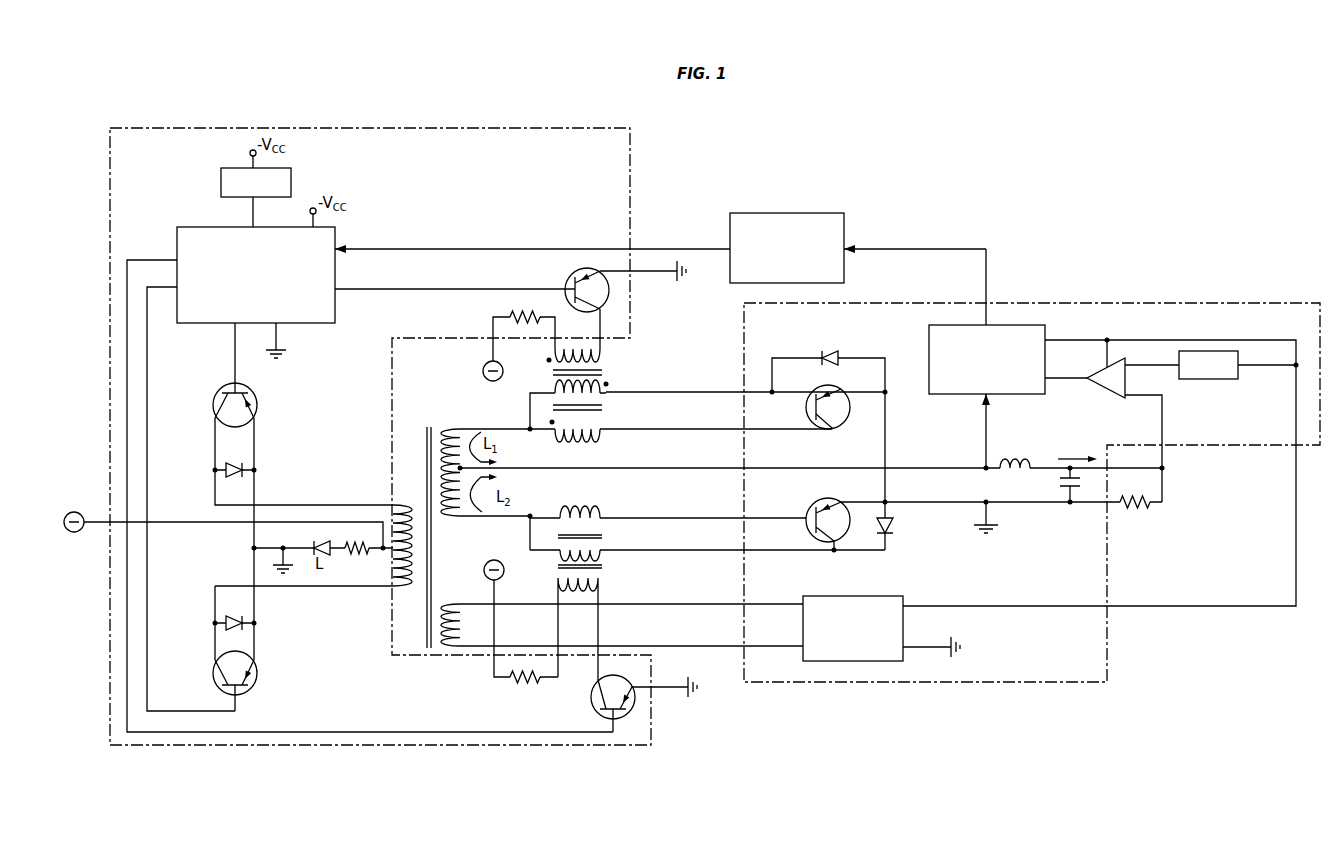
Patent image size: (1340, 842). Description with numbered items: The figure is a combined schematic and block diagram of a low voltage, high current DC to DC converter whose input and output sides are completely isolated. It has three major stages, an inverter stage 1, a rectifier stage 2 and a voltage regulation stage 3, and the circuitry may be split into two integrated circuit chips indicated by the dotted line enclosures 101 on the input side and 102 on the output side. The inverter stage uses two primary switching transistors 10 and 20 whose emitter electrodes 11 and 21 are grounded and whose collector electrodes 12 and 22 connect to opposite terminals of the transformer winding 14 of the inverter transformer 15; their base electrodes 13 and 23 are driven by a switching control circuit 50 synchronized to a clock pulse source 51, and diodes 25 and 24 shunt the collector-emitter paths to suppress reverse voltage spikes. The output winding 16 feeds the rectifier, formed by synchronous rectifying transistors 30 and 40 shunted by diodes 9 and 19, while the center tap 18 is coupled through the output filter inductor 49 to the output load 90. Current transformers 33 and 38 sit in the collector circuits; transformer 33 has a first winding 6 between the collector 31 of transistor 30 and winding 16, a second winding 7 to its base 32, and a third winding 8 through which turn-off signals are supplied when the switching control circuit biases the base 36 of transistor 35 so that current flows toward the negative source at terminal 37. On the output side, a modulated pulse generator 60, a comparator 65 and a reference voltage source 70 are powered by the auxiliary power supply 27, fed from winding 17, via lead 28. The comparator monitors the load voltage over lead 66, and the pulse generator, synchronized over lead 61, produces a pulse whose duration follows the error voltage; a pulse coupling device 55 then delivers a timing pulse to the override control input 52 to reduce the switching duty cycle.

The inverter stage 1 is at (283, 519).
The rectifier stage 2 is at (640, 467).
The voltage regulation stage 3 is at (1068, 478).
The first winding 6 is at (576, 403).
The second winding 7 is at (477, 460).
The third winding 8 is at (580, 359).
The diode 9 is at (828, 419).
The primary switching transistor 10 is at (240, 375).
The emitter electrode 11 is at (258, 415).
The collector electrode 12 is at (215, 411).
The base electrode 13 is at (243, 387).
The transformer winding 14 is at (405, 535).
The inverter transformer 15 is at (428, 599).
The output winding 16 is at (449, 460).
The winding 17 is at (622, 625).
The center tap 18 is at (461, 465).
The diode 19 is at (896, 526).
The primary switching transistor 20 is at (235, 683).
The emitter electrode 21 is at (257, 673).
The collector electrode 22 is at (214, 672).
The base electrode 23 is at (240, 693).
The diode 24 is at (234, 614).
The diode 25 is at (234, 460).
The auxiliary power supply 27 is at (857, 598).
The lead 28 is at (1296, 523).
The synchronous rectifying transistor 30 is at (828, 409).
The collector 31 is at (810, 411).
The base 32 is at (840, 432).
The current transformer 33 is at (541, 405).
The transistor 35 is at (586, 269).
The base 36 is at (474, 287).
The terminal 37 is at (507, 346).
The current transformer 38 is at (506, 503).
The synchronous rectifying transistor 40 is at (824, 518).
The output filter inductor 49 is at (1015, 453).
The switching control circuit 50 is at (300, 323).
The clock pulse source 51 is at (221, 184).
The override control input 52 is at (345, 252).
The pulse coupling device 55 is at (791, 214).
The modulated pulse generator 60 is at (929, 336).
The lead 61 is at (985, 443).
The comparator 65 is at (1113, 391).
The lead 66 is at (1163, 413).
The reference voltage source 70 is at (1198, 377).
The output load 90 is at (1135, 493).
The dotted line enclosure 101 is at (352, 128).
The dotted line enclosure 102 is at (1187, 303).